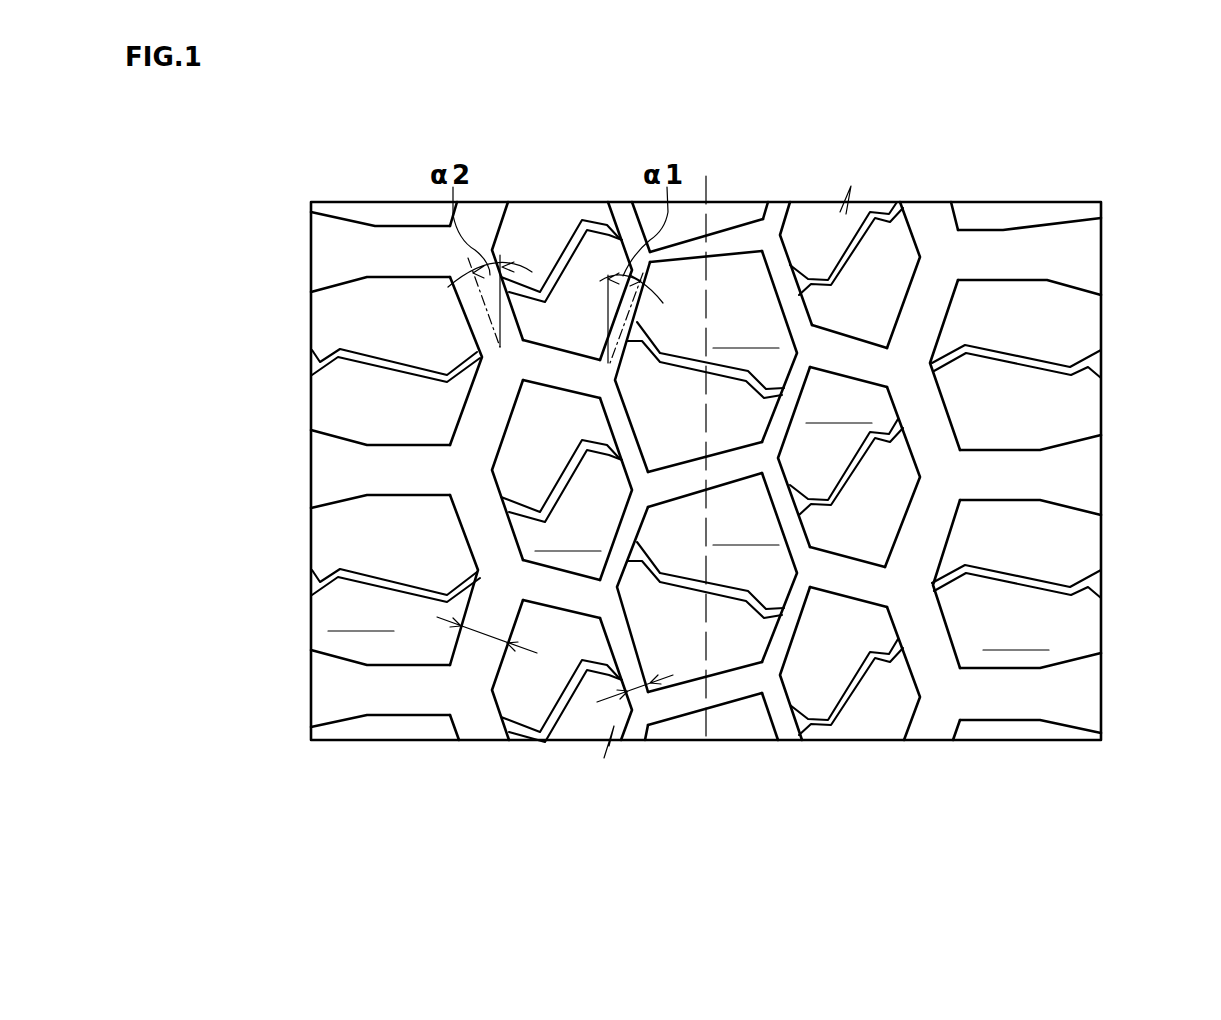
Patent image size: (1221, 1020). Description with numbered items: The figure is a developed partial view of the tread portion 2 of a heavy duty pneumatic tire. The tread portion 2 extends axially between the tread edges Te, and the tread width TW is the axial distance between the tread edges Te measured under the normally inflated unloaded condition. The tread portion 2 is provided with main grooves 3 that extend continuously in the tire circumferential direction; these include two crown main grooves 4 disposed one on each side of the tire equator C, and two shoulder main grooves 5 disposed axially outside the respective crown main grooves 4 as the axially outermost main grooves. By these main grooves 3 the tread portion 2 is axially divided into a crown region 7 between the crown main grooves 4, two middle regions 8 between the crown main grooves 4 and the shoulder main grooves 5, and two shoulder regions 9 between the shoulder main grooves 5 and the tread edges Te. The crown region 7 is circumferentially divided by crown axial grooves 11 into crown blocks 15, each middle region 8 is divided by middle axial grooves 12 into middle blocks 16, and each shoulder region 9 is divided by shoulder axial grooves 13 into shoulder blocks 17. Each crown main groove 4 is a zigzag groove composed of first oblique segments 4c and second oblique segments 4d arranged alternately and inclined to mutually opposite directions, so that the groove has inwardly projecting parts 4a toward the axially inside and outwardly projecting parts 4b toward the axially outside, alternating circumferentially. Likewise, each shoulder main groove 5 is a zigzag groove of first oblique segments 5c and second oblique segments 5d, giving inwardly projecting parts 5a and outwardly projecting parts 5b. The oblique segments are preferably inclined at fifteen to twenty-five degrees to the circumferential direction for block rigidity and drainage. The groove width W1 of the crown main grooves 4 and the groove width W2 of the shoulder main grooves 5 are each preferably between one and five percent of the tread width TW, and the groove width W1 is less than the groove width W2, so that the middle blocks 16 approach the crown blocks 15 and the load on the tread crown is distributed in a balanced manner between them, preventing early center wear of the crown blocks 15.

The tread portion 2 is at (410, 168).
The main grooves 3 is at (597, 137).
The crown main grooves 4 is at (784, 200).
The shoulder main grooves 5 is at (942, 200).
The inwardly projecting parts 4a is at (760, 688).
The outwardly projecting parts 4b is at (807, 568).
The first oblique segments 4c is at (800, 252).
The second oblique segments 4d is at (738, 258).
The inwardly projecting parts 5a is at (907, 592).
The outwardly projecting parts 5b is at (948, 694).
The first oblique segments 5c is at (908, 300).
The second oblique segments 5d is at (927, 415).
The crown region 7 is at (692, 743).
The middle regions 8 is at (875, 726).
The shoulder regions 9 is at (1028, 701).
The crown axial grooves 11 is at (649, 493).
The middle axial grooves 12 is at (872, 582).
The shoulder axial grooves 13 is at (1067, 265).
The crown blocks 15 is at (640, 397).
The middle blocks 16 is at (880, 506).
The shoulder blocks 17 is at (1060, 408).
The tread width TW is at (1089, 93).
The tread edges Te is at (1101, 200).
The tire equator C is at (706, 443).
The groove width of the crown main grooves W1 is at (648, 688).
The groove width of the shoulder main grooves W2 is at (480, 637).